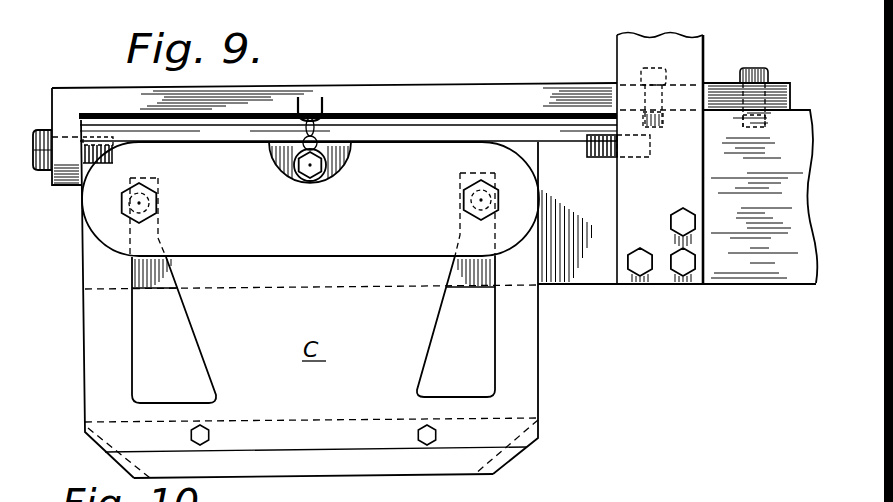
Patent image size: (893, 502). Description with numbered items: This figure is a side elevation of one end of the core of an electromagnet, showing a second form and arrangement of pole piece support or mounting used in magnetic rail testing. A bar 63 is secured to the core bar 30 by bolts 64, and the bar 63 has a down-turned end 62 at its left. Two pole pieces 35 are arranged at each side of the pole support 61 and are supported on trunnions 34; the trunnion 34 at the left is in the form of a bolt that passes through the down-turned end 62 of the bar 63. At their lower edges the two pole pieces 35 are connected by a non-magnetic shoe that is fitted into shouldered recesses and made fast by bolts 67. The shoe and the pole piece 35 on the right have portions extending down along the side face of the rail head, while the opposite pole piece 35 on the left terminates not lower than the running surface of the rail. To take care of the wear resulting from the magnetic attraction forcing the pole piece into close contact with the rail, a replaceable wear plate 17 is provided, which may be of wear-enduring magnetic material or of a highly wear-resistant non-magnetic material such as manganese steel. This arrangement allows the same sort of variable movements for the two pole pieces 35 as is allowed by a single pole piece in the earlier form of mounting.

The replaceable wear plate 17 is at (351, 465).
The core bar 30 is at (790, 127).
The trunnion 34 is at (98, 140).
The pole piece 35 is at (514, 340).
The pole support 61 is at (450, 128).
The down-turned end 62 is at (62, 122).
The bar 63 is at (390, 91).
The bolts 64 is at (748, 70).
The bolts 67 is at (206, 432).